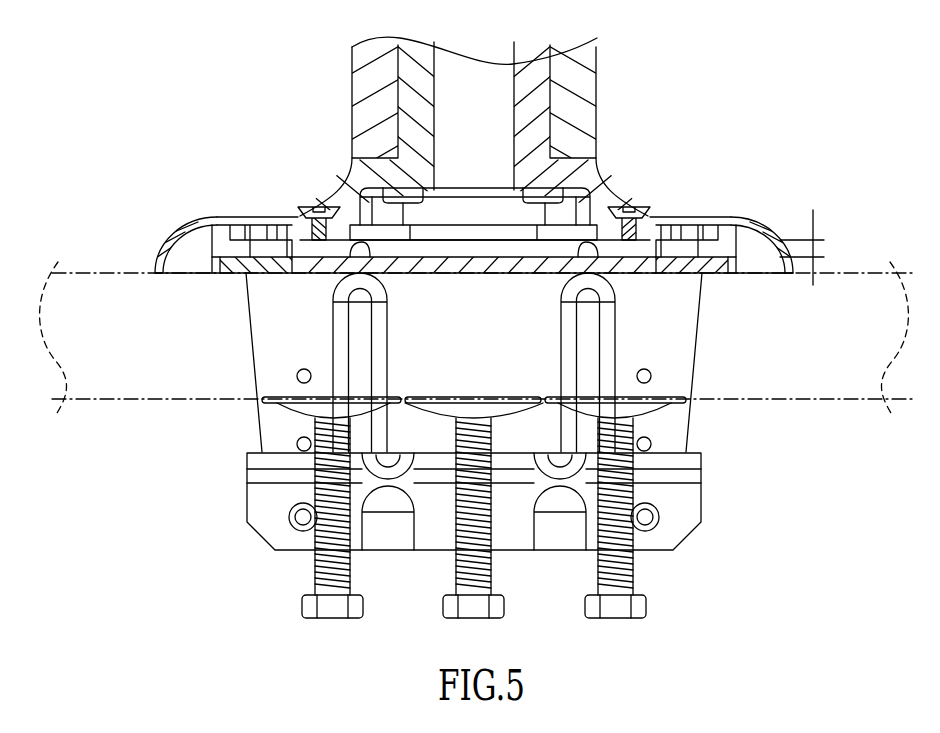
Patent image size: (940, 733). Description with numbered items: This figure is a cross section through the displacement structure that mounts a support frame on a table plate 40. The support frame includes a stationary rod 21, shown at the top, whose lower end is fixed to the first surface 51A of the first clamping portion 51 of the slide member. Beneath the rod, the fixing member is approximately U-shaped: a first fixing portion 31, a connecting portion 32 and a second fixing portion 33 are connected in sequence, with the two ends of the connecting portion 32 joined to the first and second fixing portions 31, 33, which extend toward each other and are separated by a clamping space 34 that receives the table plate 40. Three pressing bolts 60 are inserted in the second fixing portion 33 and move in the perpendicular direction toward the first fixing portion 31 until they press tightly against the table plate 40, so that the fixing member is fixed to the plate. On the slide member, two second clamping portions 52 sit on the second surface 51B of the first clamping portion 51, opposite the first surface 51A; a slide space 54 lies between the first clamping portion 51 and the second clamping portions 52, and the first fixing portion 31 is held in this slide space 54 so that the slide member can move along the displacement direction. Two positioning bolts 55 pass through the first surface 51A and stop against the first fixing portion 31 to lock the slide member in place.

The stationary rod 21 is at (357, 83).
The first fixing portion 31 is at (461, 275).
The connecting portion 32 is at (270, 428).
The second fixing portion 33 is at (688, 460).
The clamping space 34 is at (672, 371).
The table plate 40 is at (866, 284).
The first clamping portion 51 is at (684, 210).
The first surface 51A is at (727, 218).
The second surface 51B is at (182, 277).
The second clamping portion 52 is at (235, 270).
The slide space 54 is at (815, 247).
The positioning bolt 55 is at (315, 207).
The pressing bolt 60 is at (315, 572).